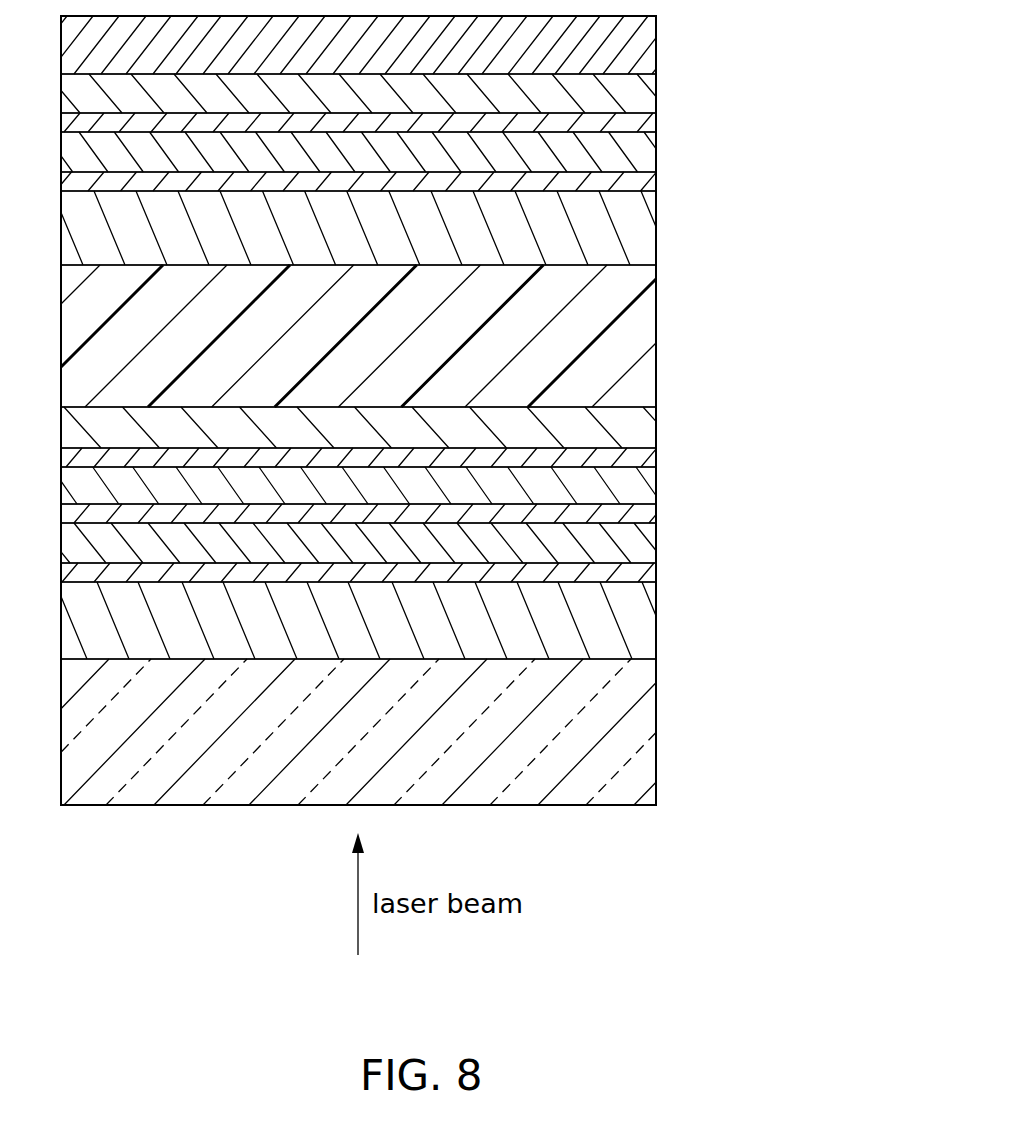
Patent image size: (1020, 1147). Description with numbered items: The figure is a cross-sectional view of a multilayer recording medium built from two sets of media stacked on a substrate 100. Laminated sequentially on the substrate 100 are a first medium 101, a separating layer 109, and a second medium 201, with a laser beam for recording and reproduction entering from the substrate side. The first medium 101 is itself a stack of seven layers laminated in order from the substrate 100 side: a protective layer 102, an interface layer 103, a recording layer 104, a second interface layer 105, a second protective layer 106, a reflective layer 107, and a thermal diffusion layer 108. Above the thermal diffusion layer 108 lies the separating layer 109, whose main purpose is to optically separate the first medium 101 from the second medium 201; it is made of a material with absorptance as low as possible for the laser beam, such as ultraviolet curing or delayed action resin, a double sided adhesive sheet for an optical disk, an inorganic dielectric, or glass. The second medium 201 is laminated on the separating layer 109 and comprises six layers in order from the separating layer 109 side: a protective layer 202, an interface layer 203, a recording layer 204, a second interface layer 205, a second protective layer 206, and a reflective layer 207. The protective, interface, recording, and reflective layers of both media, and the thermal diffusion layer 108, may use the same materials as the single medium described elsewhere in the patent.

The substrate 100 is at (652, 728).
The first medium 101 is at (476, 526).
The protective layer 102 is at (434, 620).
The interface layer 103 is at (652, 571).
The recording layer 104 is at (652, 541).
The interface layer 105 is at (652, 512).
The protective layer 106 is at (652, 482).
The reflective layer 107 is at (652, 450).
The thermal diffusion layer 108 is at (652, 419).
The separating layer 109 is at (652, 313).
The second medium 201 is at (476, 136).
The protective layer 202 is at (433, 228).
The interface layer 203 is at (652, 181).
The recording layer 204 is at (652, 150).
The interface layer 205 is at (652, 118).
The protective layer 206 is at (652, 78).
The reflective layer 207 is at (652, 40).